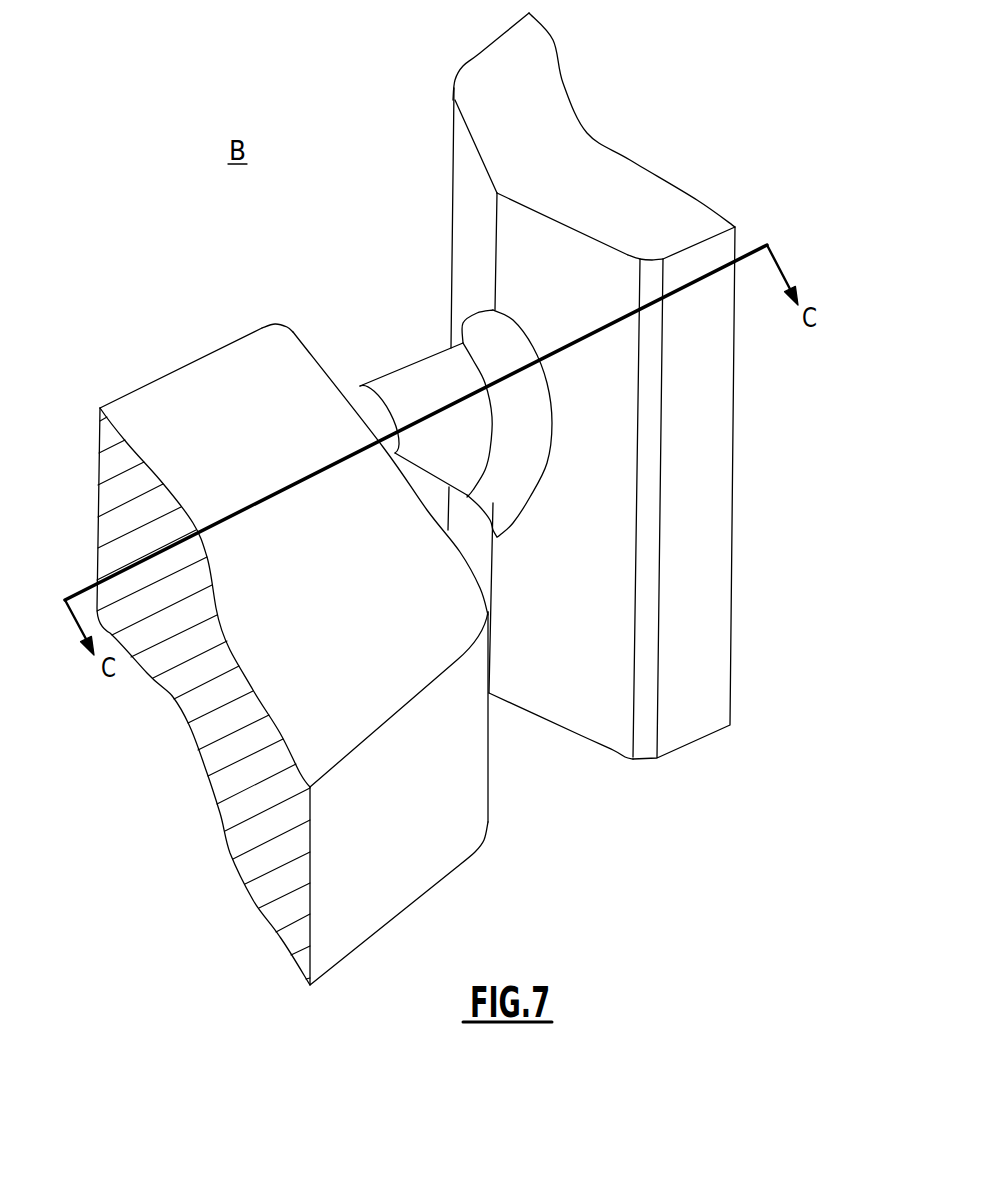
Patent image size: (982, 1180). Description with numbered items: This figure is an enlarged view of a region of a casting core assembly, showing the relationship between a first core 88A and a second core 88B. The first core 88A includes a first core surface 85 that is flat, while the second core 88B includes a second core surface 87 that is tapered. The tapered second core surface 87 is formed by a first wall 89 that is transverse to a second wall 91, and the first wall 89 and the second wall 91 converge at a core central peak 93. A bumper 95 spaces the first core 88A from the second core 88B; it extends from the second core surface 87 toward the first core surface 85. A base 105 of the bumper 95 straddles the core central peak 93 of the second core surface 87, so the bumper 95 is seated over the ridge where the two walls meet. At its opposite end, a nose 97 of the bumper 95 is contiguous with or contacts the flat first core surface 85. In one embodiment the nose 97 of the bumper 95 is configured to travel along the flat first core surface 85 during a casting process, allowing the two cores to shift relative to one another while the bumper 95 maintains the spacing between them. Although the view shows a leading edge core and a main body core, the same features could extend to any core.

The first core surface 85 is at (332, 355).
The second core surface 87 is at (458, 164).
The first core 88A is at (292, 641).
The second core 88B is at (555, 386).
The first wall 89 is at (462, 140).
The second wall 91 is at (592, 237).
The core central peak 93 is at (497, 247).
The bumper 95 is at (469, 451).
The nose 97 is at (375, 403).
The base 105 is at (553, 420).